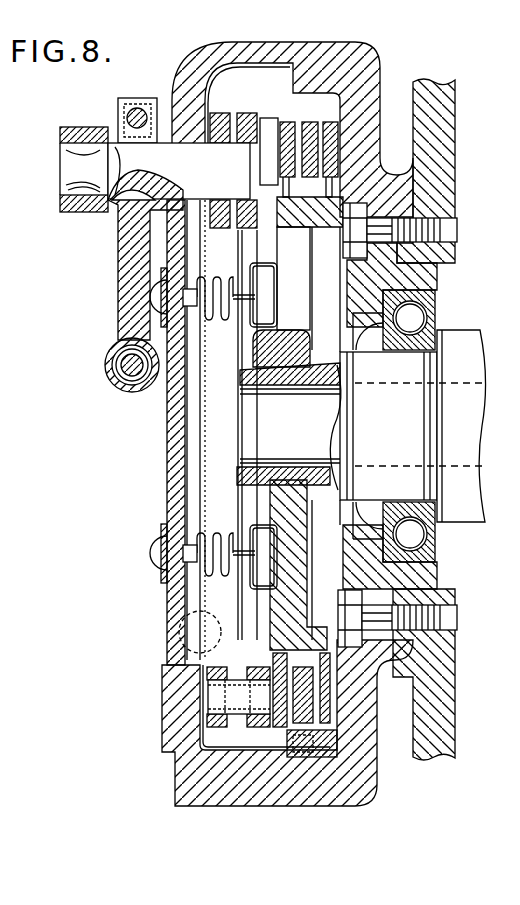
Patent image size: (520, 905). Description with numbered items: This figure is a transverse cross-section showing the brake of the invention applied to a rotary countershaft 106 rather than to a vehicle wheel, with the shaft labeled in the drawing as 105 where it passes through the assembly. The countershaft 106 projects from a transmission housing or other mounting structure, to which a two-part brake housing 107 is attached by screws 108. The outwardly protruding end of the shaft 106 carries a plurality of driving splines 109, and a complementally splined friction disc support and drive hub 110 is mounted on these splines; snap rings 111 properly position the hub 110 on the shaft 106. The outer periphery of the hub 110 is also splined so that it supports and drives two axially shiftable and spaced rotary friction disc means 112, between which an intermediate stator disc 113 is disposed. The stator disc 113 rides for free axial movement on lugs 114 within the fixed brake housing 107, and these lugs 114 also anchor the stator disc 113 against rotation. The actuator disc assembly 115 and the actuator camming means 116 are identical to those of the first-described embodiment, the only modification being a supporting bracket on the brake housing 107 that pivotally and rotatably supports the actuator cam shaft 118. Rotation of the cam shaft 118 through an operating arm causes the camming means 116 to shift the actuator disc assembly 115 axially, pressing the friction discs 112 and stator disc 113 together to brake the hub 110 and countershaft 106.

The shaft 105 is at (407, 426).
The countershaft 106 is at (451, 130).
The brake housing 107 is at (382, 51).
The screws 108 is at (383, 227).
The driving splines 109 is at (252, 366).
The friction disc support and drive hub 110 is at (282, 606).
The snap rings 111 is at (313, 352).
The rotary friction disc means 112 is at (338, 118).
The stator disc 113 is at (306, 131).
The lugs 114 is at (288, 740).
The actuator disc assembly 115 is at (203, 661).
The actuator camming means 116 is at (249, 234).
The actuator cam shaft 118 is at (155, 245).